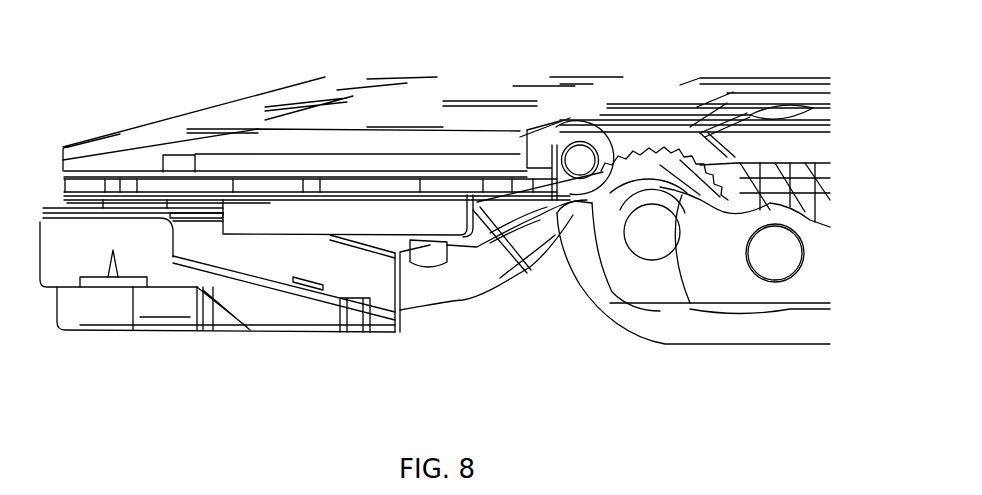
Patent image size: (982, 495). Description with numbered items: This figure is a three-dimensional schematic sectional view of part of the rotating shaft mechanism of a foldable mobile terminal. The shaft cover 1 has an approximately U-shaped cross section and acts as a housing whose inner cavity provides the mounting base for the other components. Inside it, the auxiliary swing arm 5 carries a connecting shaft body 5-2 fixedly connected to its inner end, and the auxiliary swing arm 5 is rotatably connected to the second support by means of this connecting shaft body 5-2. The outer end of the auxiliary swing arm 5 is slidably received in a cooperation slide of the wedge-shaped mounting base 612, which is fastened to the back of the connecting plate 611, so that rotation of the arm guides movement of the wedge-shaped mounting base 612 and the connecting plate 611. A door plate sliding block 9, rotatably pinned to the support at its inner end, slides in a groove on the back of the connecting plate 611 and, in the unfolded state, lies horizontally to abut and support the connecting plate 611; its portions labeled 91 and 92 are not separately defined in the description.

The shaft cover 1 is at (690, 328).
The auxiliary swing arm 5 is at (450, 285).
The connecting shaft body 5-2 is at (650, 235).
The door plate sliding block 9 is at (190, 192).
The plate left end portion 91 is at (95, 178).
The plate pivot housing 92 is at (472, 175).
The connecting plate 611 is at (253, 110).
The wedge-shaped mounting base 612 is at (272, 330).